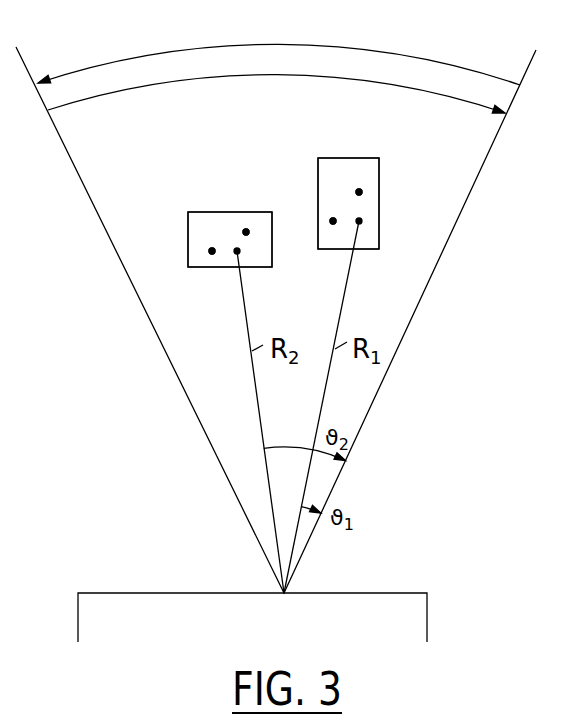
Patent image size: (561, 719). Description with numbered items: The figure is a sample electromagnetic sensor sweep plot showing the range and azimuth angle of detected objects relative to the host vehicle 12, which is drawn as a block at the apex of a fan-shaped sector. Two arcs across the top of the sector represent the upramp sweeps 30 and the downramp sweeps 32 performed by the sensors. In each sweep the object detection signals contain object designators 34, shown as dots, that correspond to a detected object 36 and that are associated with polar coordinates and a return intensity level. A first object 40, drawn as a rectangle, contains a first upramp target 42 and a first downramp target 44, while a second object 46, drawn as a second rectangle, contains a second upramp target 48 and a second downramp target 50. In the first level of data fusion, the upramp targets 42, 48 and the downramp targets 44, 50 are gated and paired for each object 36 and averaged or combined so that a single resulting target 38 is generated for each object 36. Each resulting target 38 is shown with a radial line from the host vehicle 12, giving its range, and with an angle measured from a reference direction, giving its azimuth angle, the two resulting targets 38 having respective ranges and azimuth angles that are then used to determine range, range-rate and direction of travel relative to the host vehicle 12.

The host vehicle 12 is at (427, 604).
The upramp sweep 30 is at (435, 97).
The downramp sweep 32 is at (362, 43).
The object designators 34 is at (212, 251).
The detected object 36 is at (272, 250).
The resulting target 38 is at (233, 255).
The first object 40 is at (379, 173).
The first upramp target 42 is at (333, 221).
The first downramp target 44 is at (359, 192).
The second object 46 is at (188, 223).
The second upramp target 48 is at (212, 251).
The second downramp target 50 is at (246, 232).